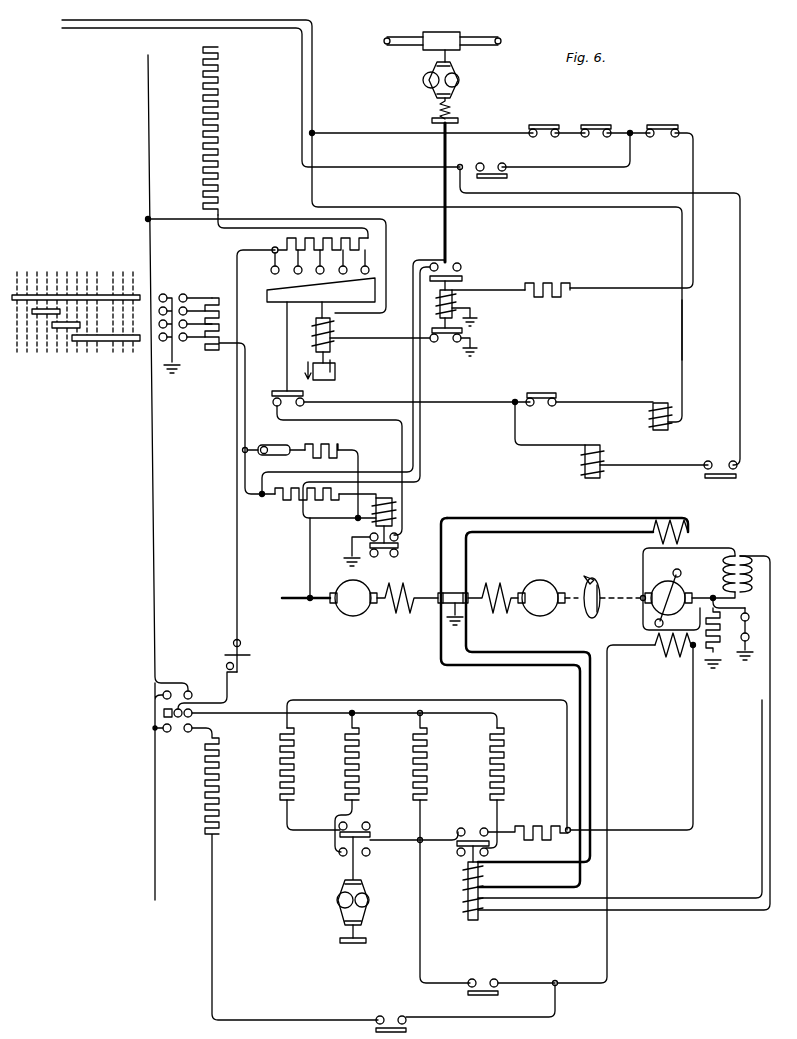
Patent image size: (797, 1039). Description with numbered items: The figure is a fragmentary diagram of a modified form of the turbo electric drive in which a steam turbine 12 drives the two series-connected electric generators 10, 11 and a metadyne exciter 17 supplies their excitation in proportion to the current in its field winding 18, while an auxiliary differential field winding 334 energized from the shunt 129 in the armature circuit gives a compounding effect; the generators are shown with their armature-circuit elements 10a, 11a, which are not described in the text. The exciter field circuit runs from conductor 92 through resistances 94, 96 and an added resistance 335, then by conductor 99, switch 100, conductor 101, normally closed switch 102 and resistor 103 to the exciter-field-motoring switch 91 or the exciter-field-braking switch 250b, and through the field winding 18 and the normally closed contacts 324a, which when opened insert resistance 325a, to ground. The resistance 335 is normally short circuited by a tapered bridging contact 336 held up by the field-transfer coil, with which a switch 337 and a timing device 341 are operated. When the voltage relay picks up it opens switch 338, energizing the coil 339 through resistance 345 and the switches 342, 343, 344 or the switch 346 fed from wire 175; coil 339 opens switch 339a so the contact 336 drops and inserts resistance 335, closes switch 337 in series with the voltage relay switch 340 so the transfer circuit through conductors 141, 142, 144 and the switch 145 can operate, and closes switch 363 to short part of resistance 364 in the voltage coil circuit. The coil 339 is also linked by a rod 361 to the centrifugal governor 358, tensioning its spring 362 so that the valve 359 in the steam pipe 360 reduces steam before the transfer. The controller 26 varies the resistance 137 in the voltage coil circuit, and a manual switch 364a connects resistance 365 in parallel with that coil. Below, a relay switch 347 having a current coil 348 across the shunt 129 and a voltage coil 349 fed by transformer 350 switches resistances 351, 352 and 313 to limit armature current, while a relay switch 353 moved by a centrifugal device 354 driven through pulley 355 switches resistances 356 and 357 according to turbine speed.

The conductor 141 is at (312, 30).
The conductor 175 is at (312, 88).
The valve 359 is at (430, 40).
The steam supply pipe 360 is at (492, 30).
The centrifugal steam governor 358 is at (456, 80).
The spring 362 is at (452, 112).
The rod 361 is at (443, 233).
The conductor 92 is at (148, 143).
The resistance 96 is at (219, 78).
The resistance 94 is at (219, 180).
The SP4 switch 342 is at (537, 139).
The P8 switch 343 is at (604, 139).
The P8 switch 344 is at (672, 139).
The SP3 switch 346 is at (505, 173).
The second switch 363 is at (461, 268).
The coil 339 is at (453, 300).
The resistance 345 is at (550, 281).
The switch 339a is at (444, 342).
The resistance 335 is at (276, 247).
The tapered bridging contact 336 is at (321, 290).
The FTR switch 337 is at (279, 392).
The timing device 341 is at (336, 372).
The controller 26 is at (82, 260).
The resistance 137 is at (224, 344).
The conductor 142 is at (682, 350).
The conductor 144 is at (592, 401).
The SP2 switch 145 is at (534, 407).
The manually operated switch 364a is at (280, 440).
The resistance 365 is at (316, 441).
The resistance 364 is at (300, 501).
The V1 switch 340 is at (404, 524).
The switch 338 is at (396, 553).
The conductor 99 is at (237, 572).
The switch 100 is at (245, 648).
The conductor 101 is at (228, 688).
The normally closed switch 102 is at (191, 715).
The resistor 103 is at (208, 788).
The resistance 356 is at (294, 754).
The resistance 357 is at (361, 762).
The resistance 352 is at (428, 763).
The resistance 351 is at (507, 753).
The relay switch 353 is at (360, 829).
The centrifugal device 354 is at (338, 901).
The driving pulley 355 is at (340, 942).
The relay switch 347 is at (490, 849).
The resistance 313 is at (543, 825).
The current coil 348 is at (466, 873).
The voltage coil 349 is at (466, 910).
The EFM switch 91 is at (498, 987).
The EFB switch 250b is at (405, 1024).
The electric generator 10 is at (362, 590).
The resistor 10a is at (397, 613).
The shunt 129 is at (453, 597).
The resistor 11a is at (494, 584).
The electric generator 11 is at (542, 583).
The steam turbine 12 is at (597, 588).
The metadyne exciter 17 is at (683, 592).
The transformer 350 is at (738, 552).
The resistance 325a is at (706, 630).
The normally closed contacts 324a is at (743, 645).
The field winding 18 is at (672, 656).
The auxiliary differential field winding 334 is at (660, 538).